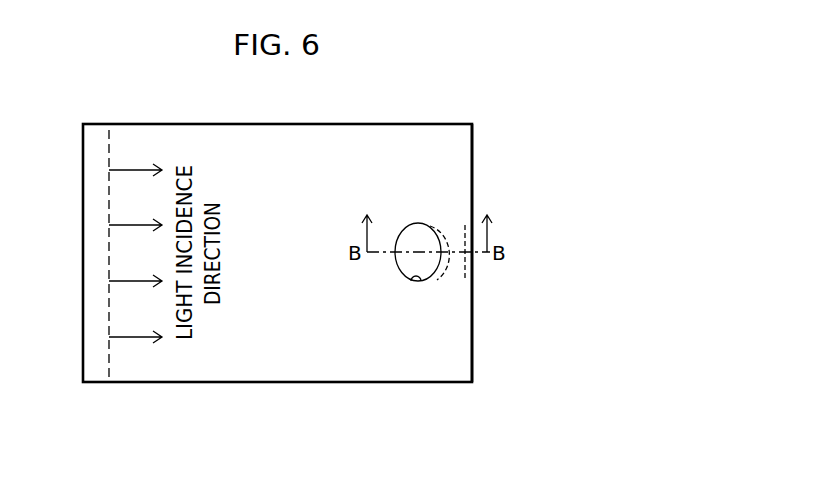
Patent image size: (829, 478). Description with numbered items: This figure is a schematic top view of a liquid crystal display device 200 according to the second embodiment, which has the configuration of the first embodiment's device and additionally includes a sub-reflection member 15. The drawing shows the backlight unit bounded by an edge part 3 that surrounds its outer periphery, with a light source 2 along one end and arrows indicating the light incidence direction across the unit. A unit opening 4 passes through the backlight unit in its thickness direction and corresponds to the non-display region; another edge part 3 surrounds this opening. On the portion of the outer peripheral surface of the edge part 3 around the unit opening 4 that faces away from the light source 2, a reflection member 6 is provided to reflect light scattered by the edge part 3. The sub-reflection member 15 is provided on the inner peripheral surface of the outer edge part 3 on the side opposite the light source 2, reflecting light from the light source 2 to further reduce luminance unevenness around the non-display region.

The liquid crystal display device 200 is at (410, 117).
The edge part 3 is at (473, 160).
The light source 2 is at (95, 254).
The unit opening 4 is at (418, 281).
The reflection member 6 is at (447, 232).
The sub-reflection member 15 is at (465, 278).